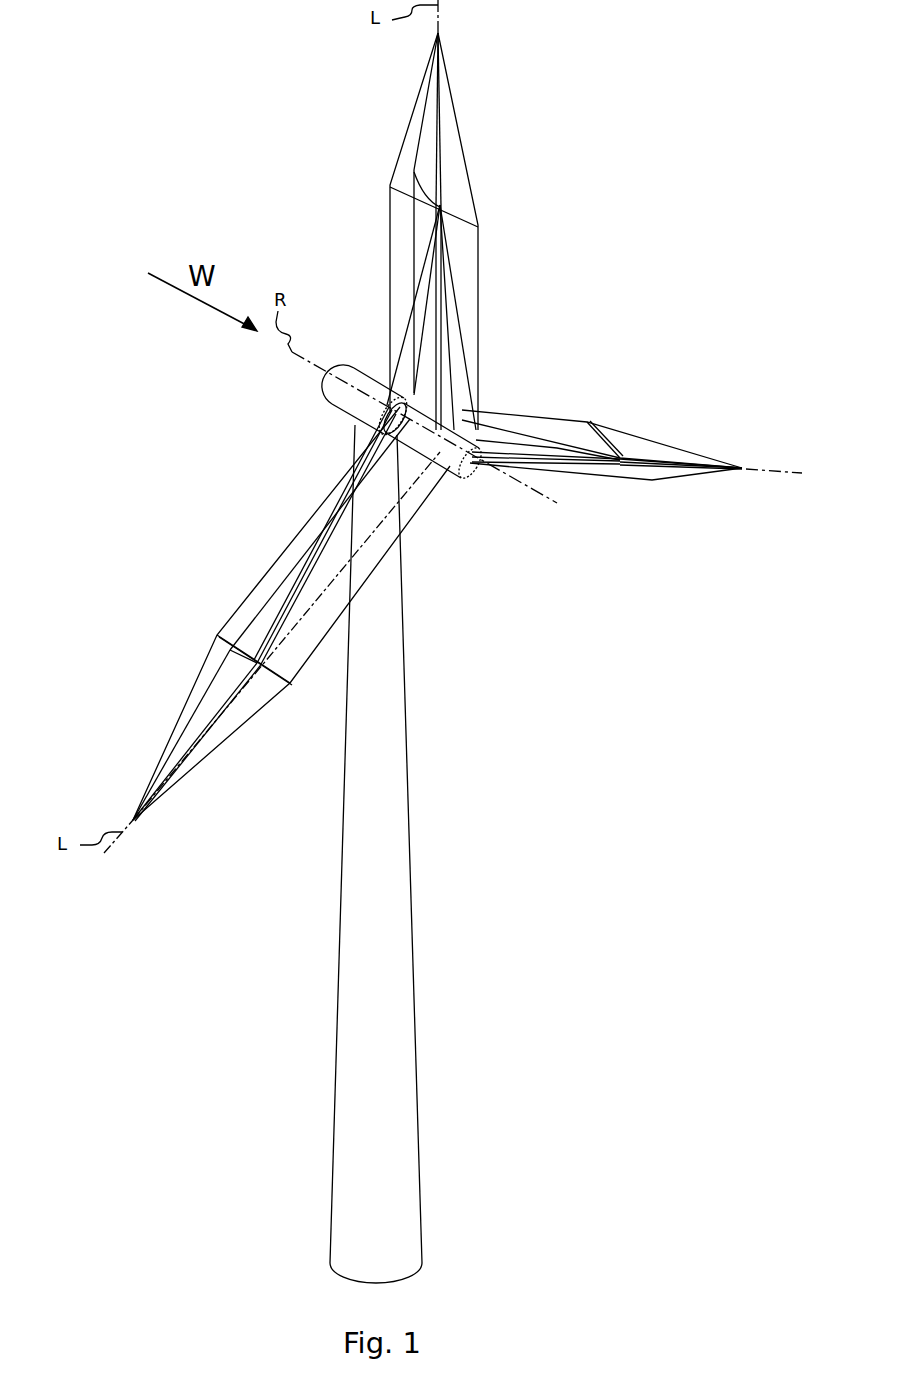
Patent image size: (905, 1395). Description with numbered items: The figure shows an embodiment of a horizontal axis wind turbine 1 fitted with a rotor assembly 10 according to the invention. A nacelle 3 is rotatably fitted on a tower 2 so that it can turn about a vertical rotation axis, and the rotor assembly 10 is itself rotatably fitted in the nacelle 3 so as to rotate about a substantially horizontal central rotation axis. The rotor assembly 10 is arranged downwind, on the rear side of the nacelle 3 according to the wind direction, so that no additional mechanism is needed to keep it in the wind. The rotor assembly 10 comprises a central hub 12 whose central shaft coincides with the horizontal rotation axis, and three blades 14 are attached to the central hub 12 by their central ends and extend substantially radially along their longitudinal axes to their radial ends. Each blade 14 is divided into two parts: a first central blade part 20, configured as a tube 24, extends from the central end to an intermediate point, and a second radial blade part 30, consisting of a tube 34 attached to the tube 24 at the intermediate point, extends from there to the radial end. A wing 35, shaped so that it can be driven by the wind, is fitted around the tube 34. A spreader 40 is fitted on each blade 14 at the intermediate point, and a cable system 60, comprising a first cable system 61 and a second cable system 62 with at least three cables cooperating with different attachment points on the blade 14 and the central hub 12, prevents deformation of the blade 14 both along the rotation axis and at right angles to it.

The wind turbine 1 is at (428, 926).
The tower 2 is at (347, 848).
The nacelle 3 is at (372, 400).
The rotor assembly 10 is at (620, 278).
The central hub 12 is at (457, 472).
The blade 14 is at (493, 258).
The first central blade part 20 is at (440, 337).
The tube 24 is at (557, 449).
The second radial blade part 30 is at (440, 158).
The tube 34 is at (736, 466).
The wing 35 is at (644, 456).
The spreader 40 is at (278, 680).
The cable system 60 is at (200, 600).
The first cable system 61 is at (305, 578).
The second cable system 62 is at (243, 740).